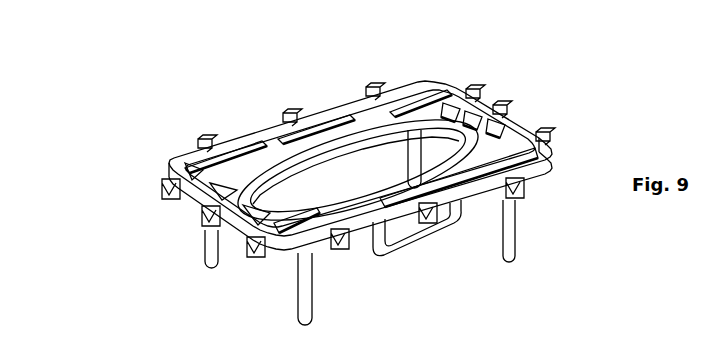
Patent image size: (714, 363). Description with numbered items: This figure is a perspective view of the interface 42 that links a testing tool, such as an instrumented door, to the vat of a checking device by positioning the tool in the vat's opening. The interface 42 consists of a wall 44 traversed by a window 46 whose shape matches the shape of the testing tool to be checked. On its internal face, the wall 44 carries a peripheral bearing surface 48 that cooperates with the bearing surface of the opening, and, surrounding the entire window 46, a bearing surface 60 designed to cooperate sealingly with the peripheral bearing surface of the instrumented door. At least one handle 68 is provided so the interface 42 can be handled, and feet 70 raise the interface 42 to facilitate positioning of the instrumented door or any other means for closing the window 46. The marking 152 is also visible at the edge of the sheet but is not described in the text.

The interface 42 is at (140, 155).
The wall 44 is at (510, 142).
The window 46 is at (373, 157).
The peripheral bearing surface 48 is at (442, 87).
The bearing surface 60 is at (268, 172).
The handle 68 is at (430, 240).
The feet 70 is at (515, 238).
The sheet marker 152 is at (71, 357).